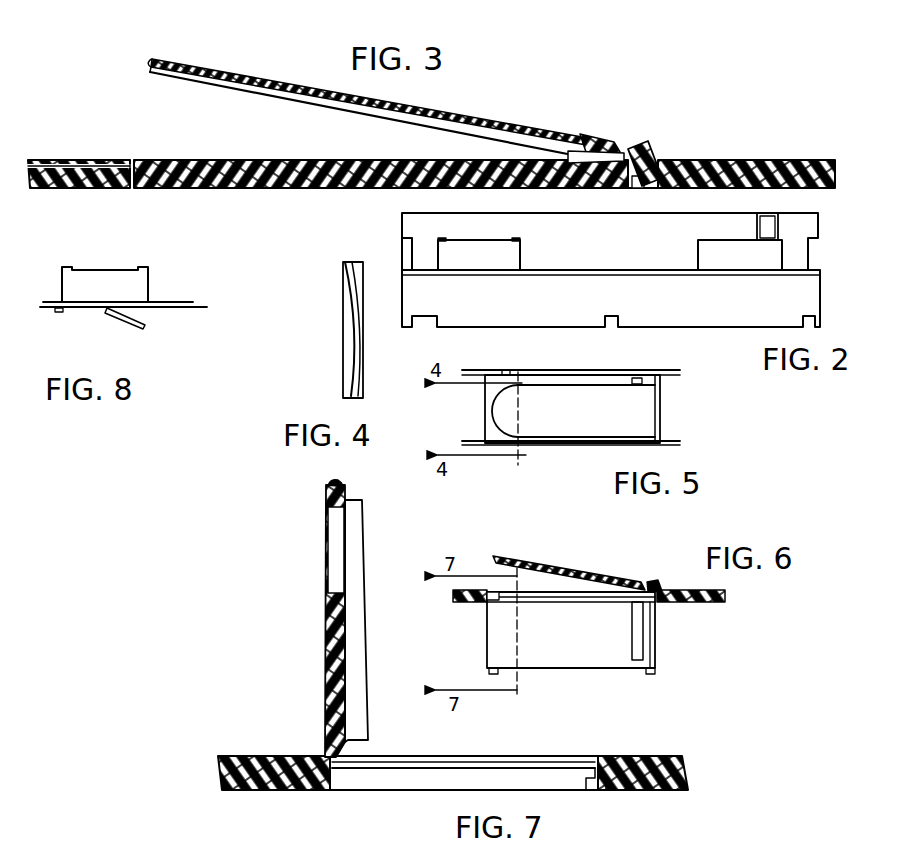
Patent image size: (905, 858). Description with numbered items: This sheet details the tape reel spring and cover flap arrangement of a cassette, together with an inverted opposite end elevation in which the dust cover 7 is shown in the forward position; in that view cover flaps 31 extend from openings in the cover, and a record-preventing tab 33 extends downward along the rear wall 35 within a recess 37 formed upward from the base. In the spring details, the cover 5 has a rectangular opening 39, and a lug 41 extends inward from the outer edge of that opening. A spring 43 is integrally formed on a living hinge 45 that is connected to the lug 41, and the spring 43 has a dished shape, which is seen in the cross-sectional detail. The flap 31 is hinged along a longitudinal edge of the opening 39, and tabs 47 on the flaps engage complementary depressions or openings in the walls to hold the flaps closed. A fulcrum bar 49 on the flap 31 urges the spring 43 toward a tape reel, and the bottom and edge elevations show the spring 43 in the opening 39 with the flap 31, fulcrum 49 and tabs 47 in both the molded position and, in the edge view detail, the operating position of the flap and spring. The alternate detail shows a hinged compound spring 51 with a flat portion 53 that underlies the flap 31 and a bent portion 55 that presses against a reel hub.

In FIG. 3, the cover 5 is at (765, 162).
In FIG. 6, the cover 5 is at (589, 596).
In FIG. 7, the cover 5 is at (453, 773).
In FIG. 2, the dust cover 7 is at (611, 298).
In FIG. 3, the cover flap 31 is at (320, 160).
In FIG. 2, the cover flap 31 is at (490, 246).
In FIG. 5, the cover flap 31 is at (571, 407).
In FIG. 6, the cover flap 31 is at (614, 669).
In FIG. 7, the cover flap 31 is at (327, 560).
In FIG. 8, the cover flap 31 is at (131, 268).
In FIG. 2, the record-preventing tab 33 is at (766, 230).
In FIG. 2, the rear wall 35 is at (610, 241).
In FIG. 2, the recess 37 is at (758, 212).
In FIG. 3, the rectangular opening 39 is at (134, 184).
In FIG. 3, the lug 41 is at (652, 145).
In FIG. 6, the lug 41 is at (654, 586).
In FIG. 3, the spring 43 is at (492, 116).
In FIG. 6, the spring 43 is at (616, 580).
In FIG. 7, the spring 43 is at (314, 621).
In FIG. 4, the spring 43 is at (350, 362).
In FIG. 3, the living hinge 45 is at (606, 150).
In FIG. 2, the tab 47 is at (522, 240).
In FIG. 6, the tab 47 is at (669, 691).
In FIG. 7, the tab 47 is at (333, 478).
In FIG. 3, the fulcrum bar 49 is at (560, 153).
In FIG. 6, the fulcrum bar 49 is at (640, 646).
In FIG. 7, the fulcrum bar 49 is at (362, 556).
In FIG. 8, the hinged compound spring 51 is at (107, 311).
In FIG. 8, the flat portion 53 is at (80, 312).
In FIG. 8, the bent portion 55 is at (132, 326).